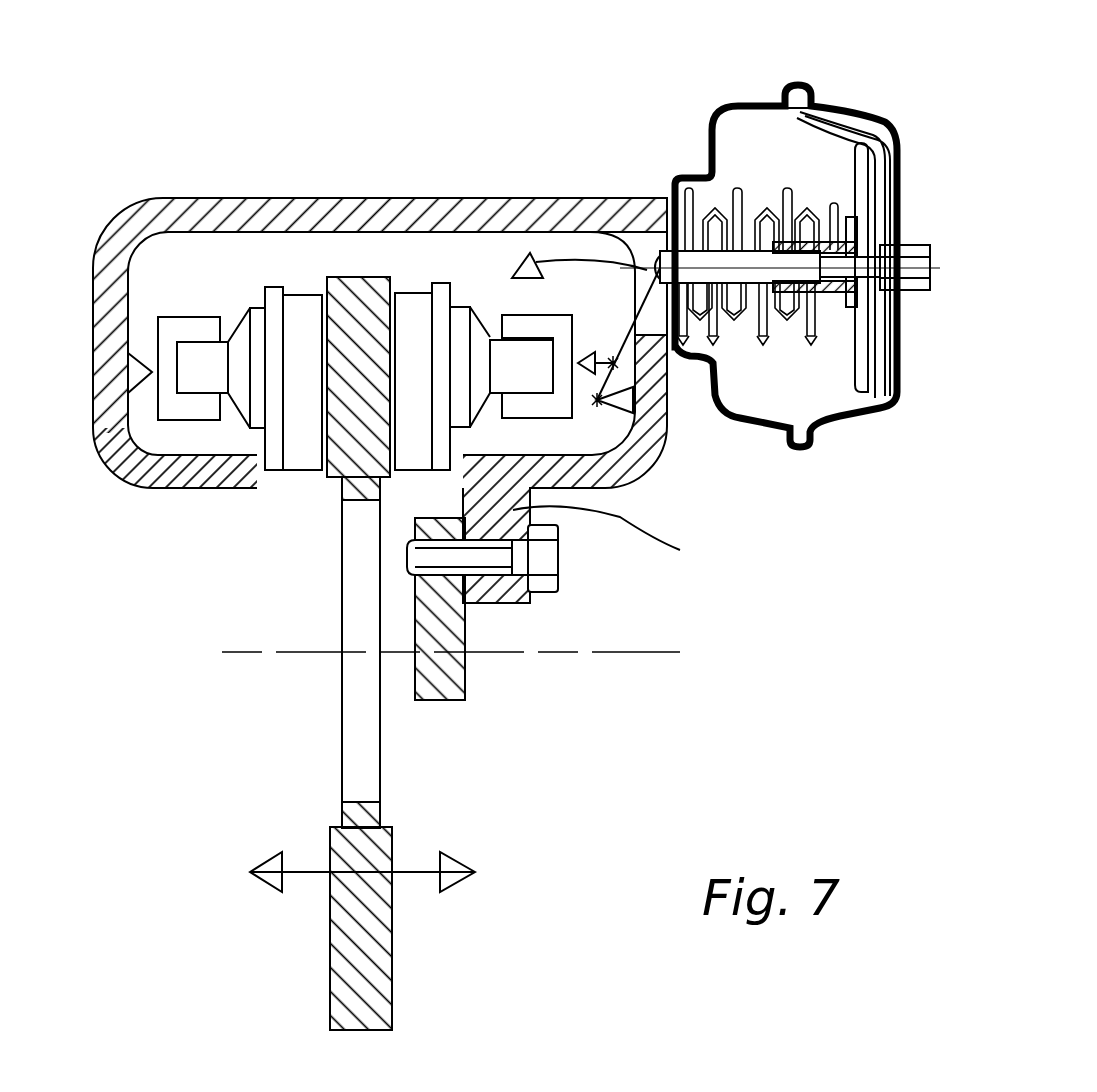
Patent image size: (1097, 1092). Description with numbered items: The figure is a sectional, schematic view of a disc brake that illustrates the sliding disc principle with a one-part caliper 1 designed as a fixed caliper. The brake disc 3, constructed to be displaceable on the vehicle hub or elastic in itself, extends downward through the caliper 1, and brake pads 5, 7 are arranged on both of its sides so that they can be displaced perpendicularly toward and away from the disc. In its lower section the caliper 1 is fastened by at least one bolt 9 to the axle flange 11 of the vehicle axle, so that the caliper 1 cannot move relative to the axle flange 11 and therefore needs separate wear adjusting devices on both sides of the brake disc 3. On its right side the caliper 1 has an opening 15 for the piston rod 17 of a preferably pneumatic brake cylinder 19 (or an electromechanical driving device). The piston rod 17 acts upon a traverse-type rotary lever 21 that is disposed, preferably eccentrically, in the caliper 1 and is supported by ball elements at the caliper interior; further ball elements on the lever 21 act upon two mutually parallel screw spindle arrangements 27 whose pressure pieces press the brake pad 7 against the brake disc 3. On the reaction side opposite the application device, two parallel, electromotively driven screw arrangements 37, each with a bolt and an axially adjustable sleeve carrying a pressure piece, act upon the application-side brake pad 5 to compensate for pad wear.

The caliper 1 is at (340, 198).
The brake disc 3 is at (358, 937).
The brake pad 5 is at (283, 297).
The brake pad 7 is at (408, 310).
The bolt 9 is at (545, 585).
The axle flange 11 is at (465, 690).
The opening 15 is at (645, 243).
The piston rod 17 is at (745, 265).
The brake cylinder 19 is at (752, 105).
The rotary lever 21 is at (623, 343).
The screw spindle arrangement 27 is at (525, 387).
The screw arrangement 37 is at (196, 300).